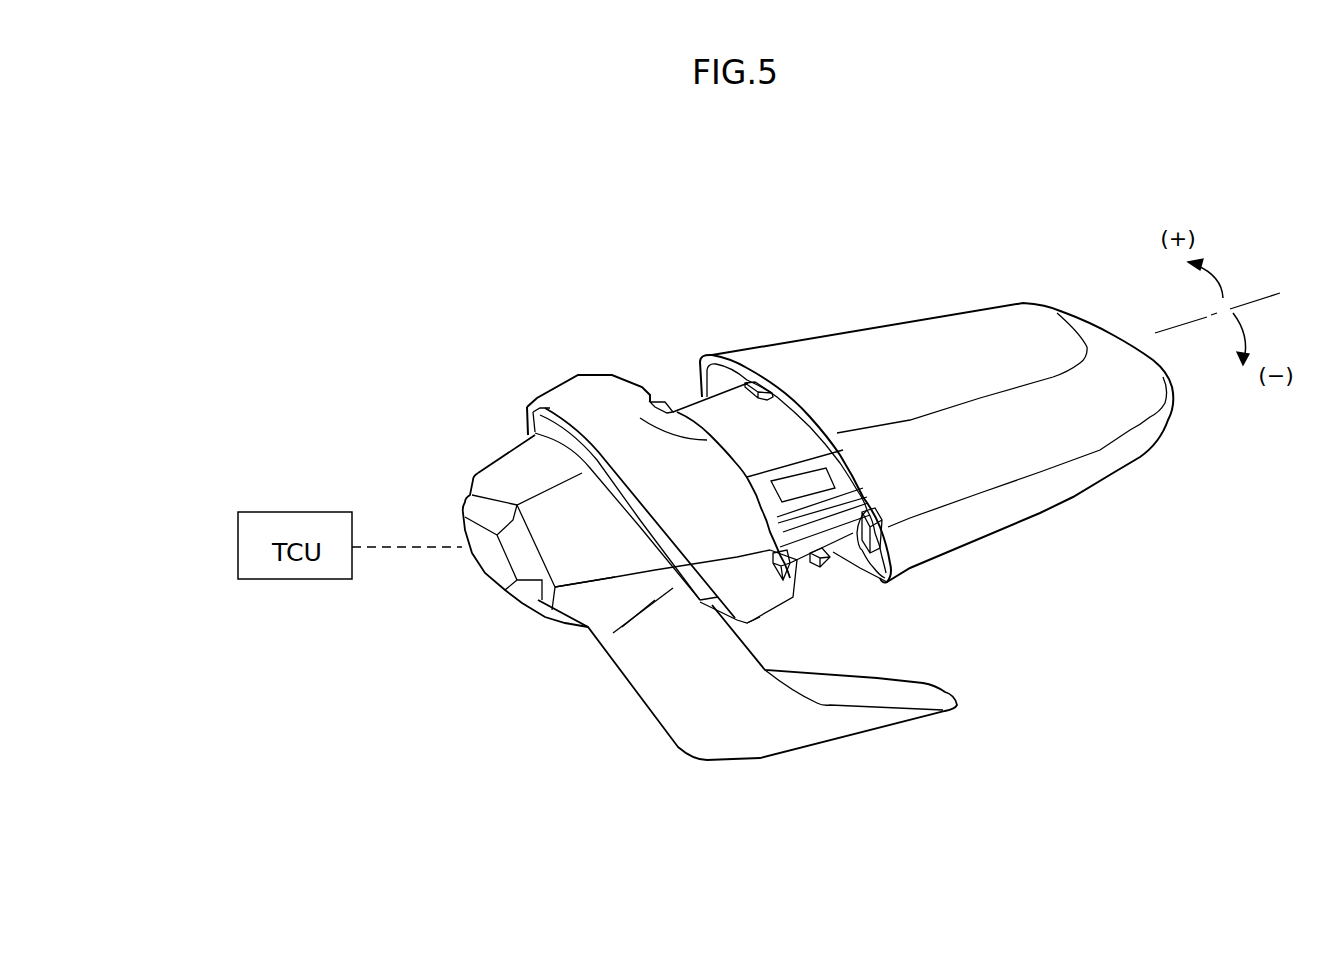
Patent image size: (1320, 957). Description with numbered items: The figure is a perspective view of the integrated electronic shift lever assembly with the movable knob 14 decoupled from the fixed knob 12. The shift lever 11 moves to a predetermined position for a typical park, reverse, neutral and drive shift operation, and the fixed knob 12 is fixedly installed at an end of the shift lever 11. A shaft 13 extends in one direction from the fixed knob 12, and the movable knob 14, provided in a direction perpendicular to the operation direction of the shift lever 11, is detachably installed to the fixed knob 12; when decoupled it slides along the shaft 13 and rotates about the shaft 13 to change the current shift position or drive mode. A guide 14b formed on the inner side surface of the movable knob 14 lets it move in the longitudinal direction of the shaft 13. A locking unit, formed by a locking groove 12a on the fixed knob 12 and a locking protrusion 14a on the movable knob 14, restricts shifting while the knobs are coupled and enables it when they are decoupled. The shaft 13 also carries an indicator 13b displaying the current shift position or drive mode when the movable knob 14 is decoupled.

The shift lever 11 is at (660, 693).
The fixed knob 12 is at (566, 392).
The locking groove 12a is at (653, 398).
The shaft 13 is at (903, 431).
The indicator 13b is at (832, 480).
The movable knob 14 is at (936, 443).
The locking protrusion 14a is at (755, 382).
The guide 14b is at (893, 582).